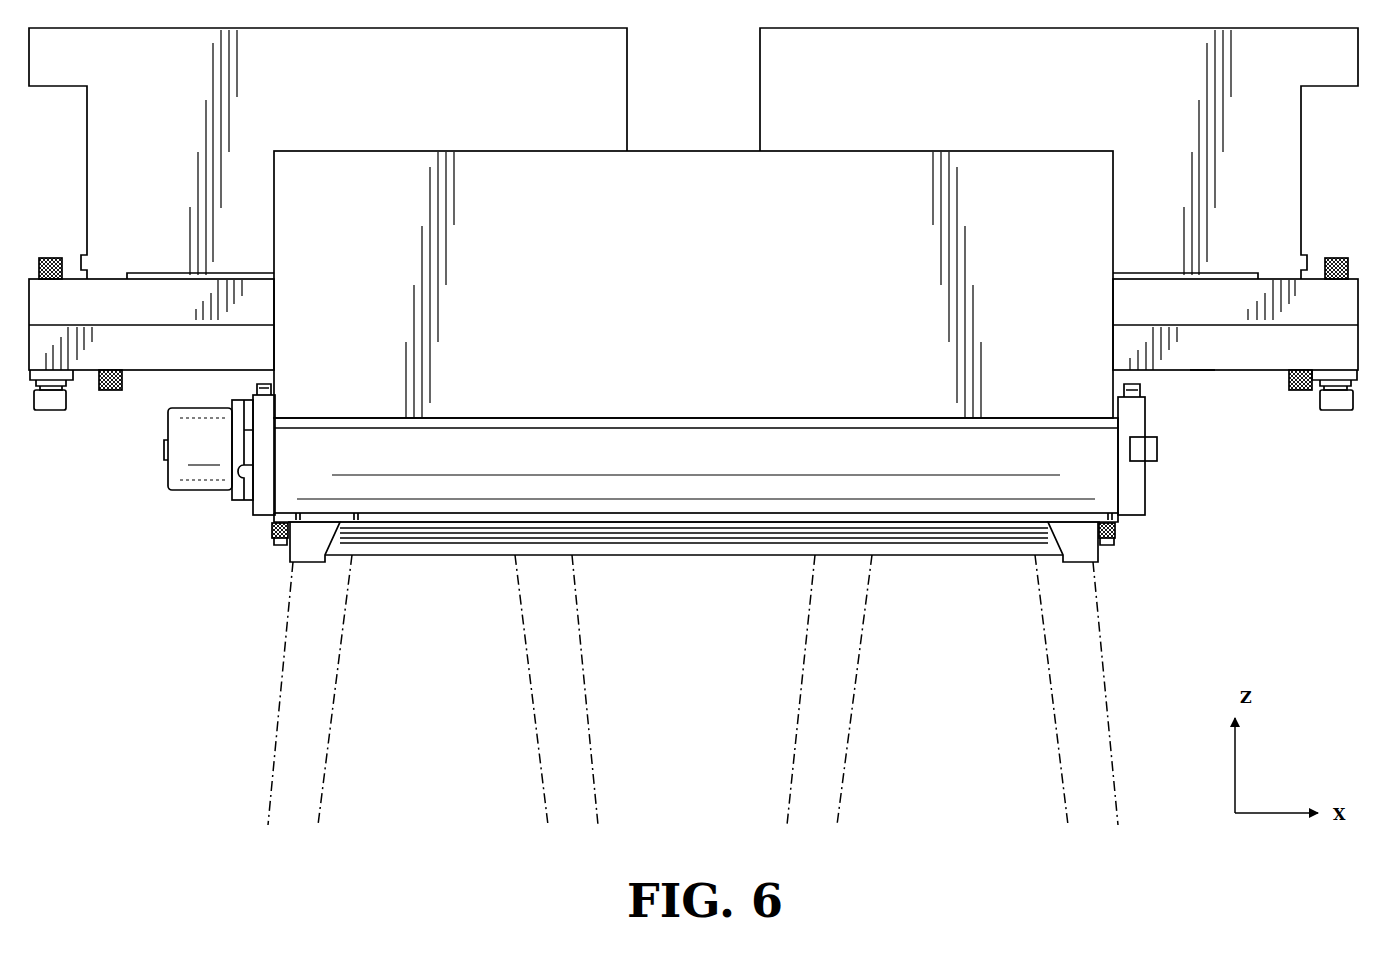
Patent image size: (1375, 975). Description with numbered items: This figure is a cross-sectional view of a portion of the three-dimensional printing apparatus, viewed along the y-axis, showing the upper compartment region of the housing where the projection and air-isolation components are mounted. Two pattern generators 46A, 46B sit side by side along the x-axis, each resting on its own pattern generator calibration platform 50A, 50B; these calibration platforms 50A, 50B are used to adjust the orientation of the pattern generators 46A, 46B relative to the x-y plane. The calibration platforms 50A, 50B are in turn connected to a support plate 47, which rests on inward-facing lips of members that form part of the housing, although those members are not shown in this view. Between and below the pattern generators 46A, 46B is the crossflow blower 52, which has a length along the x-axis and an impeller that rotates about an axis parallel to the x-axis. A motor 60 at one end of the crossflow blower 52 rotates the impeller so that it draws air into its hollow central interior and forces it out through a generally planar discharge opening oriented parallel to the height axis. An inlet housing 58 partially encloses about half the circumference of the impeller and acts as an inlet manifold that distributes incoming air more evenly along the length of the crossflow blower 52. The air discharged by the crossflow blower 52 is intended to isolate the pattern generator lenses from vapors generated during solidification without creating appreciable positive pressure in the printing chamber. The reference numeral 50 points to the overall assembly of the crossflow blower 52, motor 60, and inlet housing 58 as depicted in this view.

The pattern generator 46A is at (957, 105).
The pattern generator 46B is at (389, 105).
The support plate 47 is at (1200, 371).
The print bar assembly 50 is at (615, 488).
The pattern generator calibration platform 50A is at (1175, 313).
The pattern generator calibration platform 50B is at (112, 313).
The crossflow blower 52 is at (680, 467).
The inlet housing 58 is at (680, 298).
The motor 60 is at (176, 469).